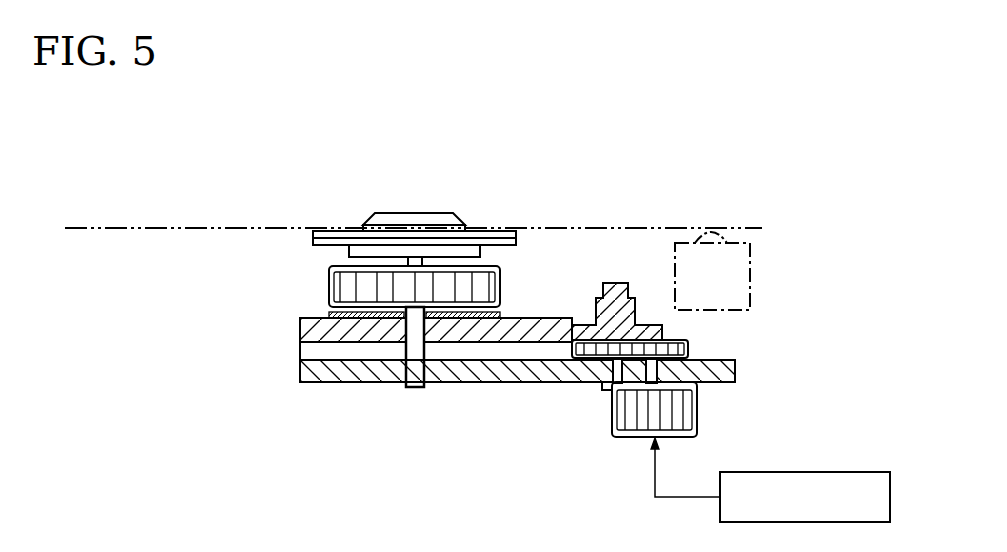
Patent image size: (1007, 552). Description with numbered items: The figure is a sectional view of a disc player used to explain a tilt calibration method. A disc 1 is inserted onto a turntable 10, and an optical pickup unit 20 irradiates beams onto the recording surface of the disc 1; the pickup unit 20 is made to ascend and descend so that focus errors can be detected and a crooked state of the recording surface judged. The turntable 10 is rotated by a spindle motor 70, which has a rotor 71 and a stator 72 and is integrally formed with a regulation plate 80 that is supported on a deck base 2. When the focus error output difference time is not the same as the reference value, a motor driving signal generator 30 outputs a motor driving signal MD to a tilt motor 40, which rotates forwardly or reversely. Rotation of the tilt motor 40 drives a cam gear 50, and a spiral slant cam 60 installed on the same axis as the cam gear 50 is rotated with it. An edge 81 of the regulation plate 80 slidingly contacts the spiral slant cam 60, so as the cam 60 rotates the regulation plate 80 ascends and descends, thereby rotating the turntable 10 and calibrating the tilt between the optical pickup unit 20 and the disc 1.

The disc 1 is at (568, 226).
The deck base 2 is at (722, 371).
The turntable 10 is at (420, 208).
The optical pickup unit 20 is at (749, 250).
The motor driving signal generator 30 is at (840, 472).
The tilt motor 40 is at (684, 423).
The cam gear 50 is at (688, 349).
The spiral slant cam 60 is at (652, 326).
The spindle motor 70 is at (473, 282).
The rotor 71 is at (491, 278).
The stator 72 is at (500, 315).
The regulation plate 80 is at (357, 330).
The edge 81 is at (573, 330).